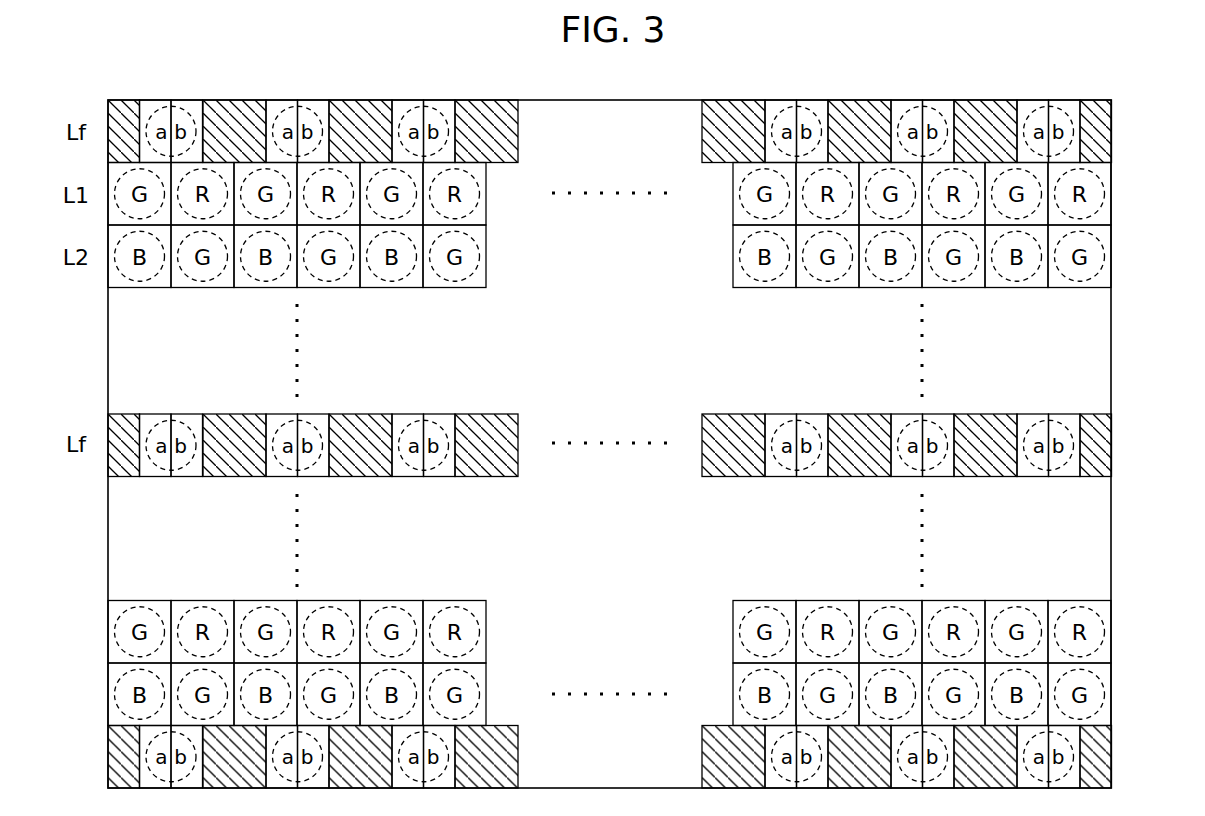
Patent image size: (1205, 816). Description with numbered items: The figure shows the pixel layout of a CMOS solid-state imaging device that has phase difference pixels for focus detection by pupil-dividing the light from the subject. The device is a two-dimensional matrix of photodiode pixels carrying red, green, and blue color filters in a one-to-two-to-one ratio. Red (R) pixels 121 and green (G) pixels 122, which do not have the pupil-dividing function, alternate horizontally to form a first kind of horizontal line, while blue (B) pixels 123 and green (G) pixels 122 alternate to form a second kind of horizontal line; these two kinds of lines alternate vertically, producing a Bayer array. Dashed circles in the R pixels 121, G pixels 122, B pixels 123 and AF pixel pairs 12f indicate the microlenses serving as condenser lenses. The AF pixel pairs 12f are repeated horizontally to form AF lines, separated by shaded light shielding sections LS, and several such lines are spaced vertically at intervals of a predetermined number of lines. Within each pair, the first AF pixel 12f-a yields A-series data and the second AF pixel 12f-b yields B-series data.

The red (R) pixel 121 is at (1112, 170).
The green (G) pixel 122 is at (1112, 237).
The blue (B) pixel 123 is at (1033, 284).
The AF pixel pair 12f is at (1046, 87).
The first AF pixel 12f-a is at (1025, 106).
The second AF pixel 12f-b is at (1077, 106).
The light shielding section LS is at (985, 105).